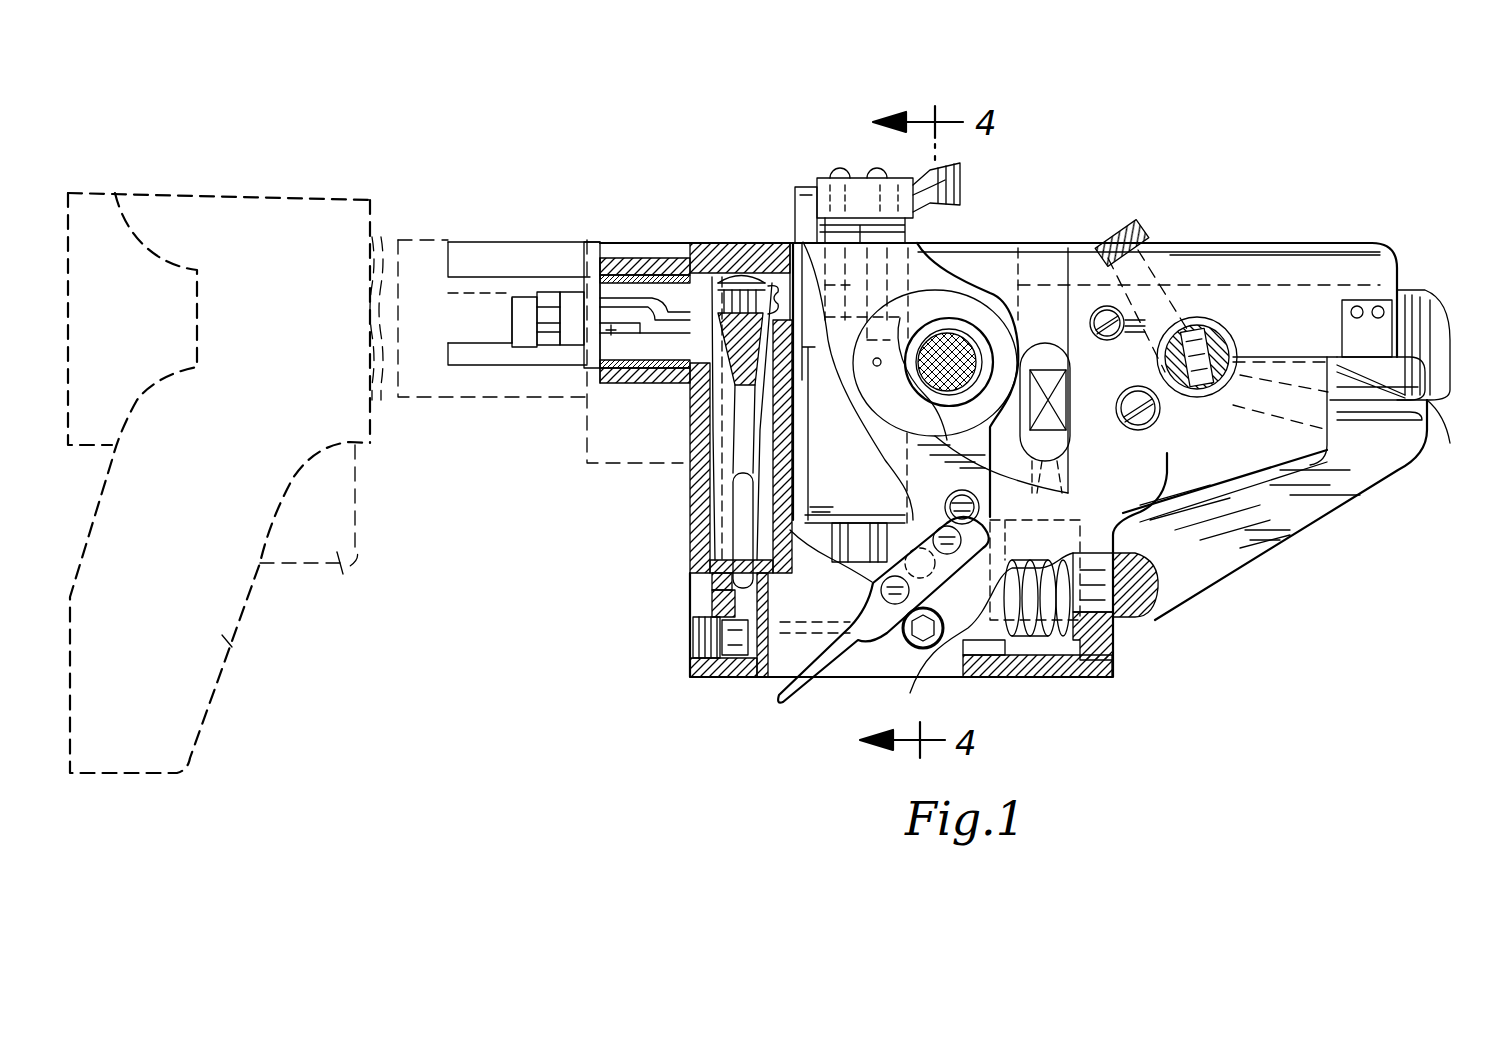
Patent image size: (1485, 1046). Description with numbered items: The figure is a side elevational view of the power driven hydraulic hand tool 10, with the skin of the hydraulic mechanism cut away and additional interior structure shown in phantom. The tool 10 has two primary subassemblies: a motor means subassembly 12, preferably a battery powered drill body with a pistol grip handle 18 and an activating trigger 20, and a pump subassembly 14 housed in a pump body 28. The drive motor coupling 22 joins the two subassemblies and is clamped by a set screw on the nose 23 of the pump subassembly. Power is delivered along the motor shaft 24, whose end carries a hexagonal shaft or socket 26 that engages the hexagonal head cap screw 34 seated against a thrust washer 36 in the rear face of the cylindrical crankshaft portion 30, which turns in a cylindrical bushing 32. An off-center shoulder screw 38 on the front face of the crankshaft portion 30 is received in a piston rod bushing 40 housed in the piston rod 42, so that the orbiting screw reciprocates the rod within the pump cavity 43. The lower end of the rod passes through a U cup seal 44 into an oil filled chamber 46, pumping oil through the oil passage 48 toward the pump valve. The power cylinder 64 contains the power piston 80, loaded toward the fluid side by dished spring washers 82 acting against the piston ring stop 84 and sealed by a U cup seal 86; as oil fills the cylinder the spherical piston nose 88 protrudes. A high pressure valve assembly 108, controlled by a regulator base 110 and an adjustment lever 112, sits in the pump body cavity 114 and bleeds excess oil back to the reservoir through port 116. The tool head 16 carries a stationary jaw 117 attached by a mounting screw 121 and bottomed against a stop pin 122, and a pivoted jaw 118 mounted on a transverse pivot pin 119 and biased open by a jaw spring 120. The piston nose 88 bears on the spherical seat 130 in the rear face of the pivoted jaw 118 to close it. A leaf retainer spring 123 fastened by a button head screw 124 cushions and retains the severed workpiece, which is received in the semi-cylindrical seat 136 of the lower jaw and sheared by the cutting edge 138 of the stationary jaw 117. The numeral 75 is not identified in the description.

The tool 10 is at (160, 184).
The motor means subassembly 12 is at (282, 220).
The pump subassembly 14 is at (680, 535).
The tool head 16 is at (1244, 232).
The pistol grip handle 18 is at (227, 643).
The activating trigger 20 is at (343, 565).
The drive motor coupling 22 is at (621, 243).
The nose 23 is at (652, 265).
The motor shaft 24 is at (477, 305).
The hexagonal shaft or socket 26 is at (553, 297).
The pump body 28 is at (705, 556).
The cylindrical crankshaft portion 30 is at (683, 246).
The cylindrical bushing 32 is at (623, 367).
The hexagonal head cap screw 34 is at (607, 330).
The thrust washer 36 is at (580, 350).
The shoulder screw 38 is at (742, 280).
The piston rod bushing 40 is at (754, 280).
The piston rod 42 is at (740, 484).
The pump cavity 43 is at (723, 508).
The U cup seal 44 is at (720, 582).
The oil filled chamber 46 is at (720, 603).
The oil passage 48 is at (790, 630).
The power cylinder 64 is at (930, 655).
The feed wheel 75 is at (957, 337).
The power piston 80 is at (1025, 678).
The spring washers 82 is at (1085, 630).
The piston ring stop 84 is at (1113, 627).
The U cup seal 86 is at (980, 652).
The piston nose 88 is at (1102, 577).
The high pressure valve assembly 108 is at (870, 482).
The regulator base 110 is at (857, 183).
The adjustment lever 112 is at (962, 172).
The pump body cavity 114 is at (857, 567).
The port 116 is at (874, 366).
The stationary jaw 117 is at (1412, 295).
The pivoted jaw 118 is at (1320, 505).
The pivot pin 119 is at (1160, 425).
The jaw spring 120 is at (1070, 417).
The mounting screw 121 is at (1133, 222).
The stop pin 122 is at (1092, 317).
The retainer spring 123 is at (1362, 373).
The button head screw 124 is at (1207, 380).
The spherical seat 130 is at (1163, 598).
The semi-cylindrical seat 136 is at (1360, 417).
The cutting edge 138 is at (1449, 436).